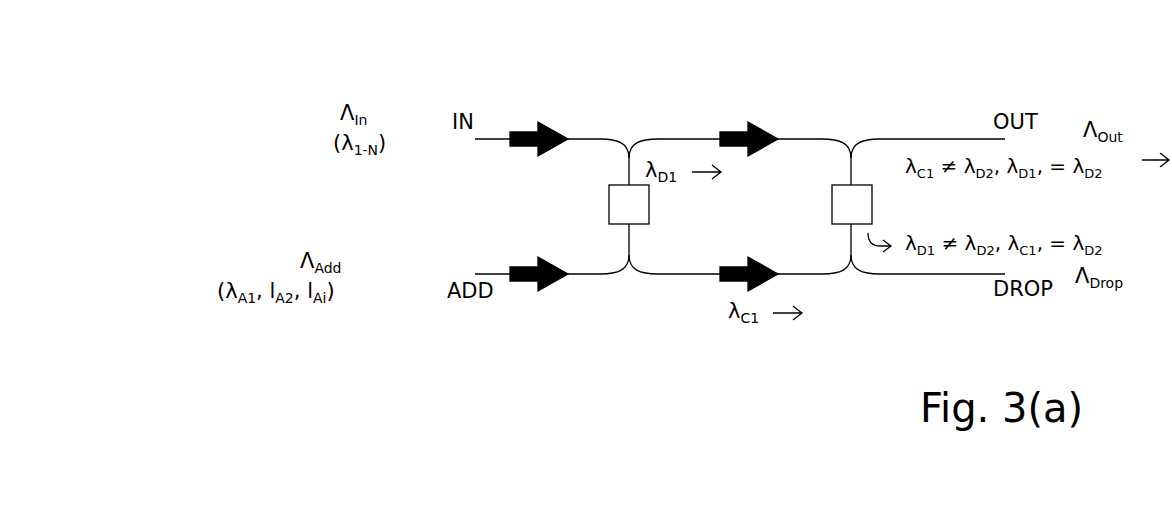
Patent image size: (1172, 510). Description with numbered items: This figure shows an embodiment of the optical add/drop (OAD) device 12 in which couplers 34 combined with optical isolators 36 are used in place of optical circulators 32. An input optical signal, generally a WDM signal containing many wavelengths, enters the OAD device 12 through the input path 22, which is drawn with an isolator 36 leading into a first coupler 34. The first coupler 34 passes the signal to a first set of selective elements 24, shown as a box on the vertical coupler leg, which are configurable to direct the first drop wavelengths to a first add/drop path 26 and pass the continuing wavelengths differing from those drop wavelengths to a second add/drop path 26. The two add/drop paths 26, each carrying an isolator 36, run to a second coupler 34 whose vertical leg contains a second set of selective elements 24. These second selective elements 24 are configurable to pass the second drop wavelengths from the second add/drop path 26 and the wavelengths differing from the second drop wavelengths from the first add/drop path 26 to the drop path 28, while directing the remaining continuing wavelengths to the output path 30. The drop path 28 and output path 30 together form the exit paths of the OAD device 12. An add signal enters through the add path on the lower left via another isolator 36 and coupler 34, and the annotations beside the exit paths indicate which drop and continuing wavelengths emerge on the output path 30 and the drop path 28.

The OAD device 12 is at (392, 89).
The input path 22 is at (487, 148).
The selective elements 24 is at (609, 197).
The add/drop path 26 is at (693, 332).
The drop path 28 is at (958, 276).
The output path 30 is at (962, 137).
The optical circulator 32 is at (488, 250).
The coupler 34 is at (629, 152).
The optical isolator 36 is at (531, 131).